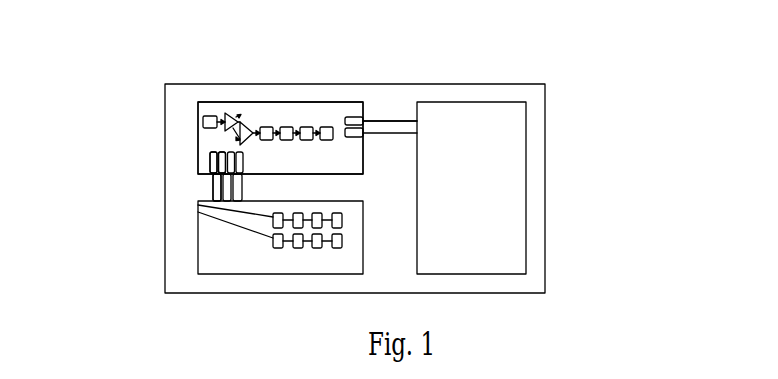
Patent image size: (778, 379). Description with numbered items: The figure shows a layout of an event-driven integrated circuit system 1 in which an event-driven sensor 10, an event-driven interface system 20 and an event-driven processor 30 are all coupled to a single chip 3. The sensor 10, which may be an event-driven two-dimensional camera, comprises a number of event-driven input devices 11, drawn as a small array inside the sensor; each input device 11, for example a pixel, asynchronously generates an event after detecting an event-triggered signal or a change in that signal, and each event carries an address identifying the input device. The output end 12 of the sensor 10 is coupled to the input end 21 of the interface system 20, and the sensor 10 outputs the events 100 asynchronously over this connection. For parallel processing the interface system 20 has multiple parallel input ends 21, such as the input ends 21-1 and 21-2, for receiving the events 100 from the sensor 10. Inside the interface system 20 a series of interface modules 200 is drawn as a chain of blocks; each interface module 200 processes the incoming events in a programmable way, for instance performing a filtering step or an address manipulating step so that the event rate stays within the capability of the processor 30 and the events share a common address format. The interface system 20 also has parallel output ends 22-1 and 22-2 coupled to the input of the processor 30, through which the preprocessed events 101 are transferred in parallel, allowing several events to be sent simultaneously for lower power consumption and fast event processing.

The event-driven integrated circuit system 1 is at (636, 118).
The single chip 3 is at (532, 217).
The event-driven processor 30 is at (437, 222).
The event-driven interface system 20 is at (260, 112).
The interface module 200 is at (280, 138).
The output end 22-1 is at (348, 126).
The output end 22-2 is at (363, 128).
The preprocessed events 101 is at (390, 120).
The input end 21 is at (70, 50).
The input end 21-1 is at (214, 152).
The input end 21-2 is at (210, 162).
The output end 12 is at (213, 195).
The events 100 is at (213, 188).
The event-driven sensor 10 is at (220, 257).
The event-driven input device 11 is at (296, 238).